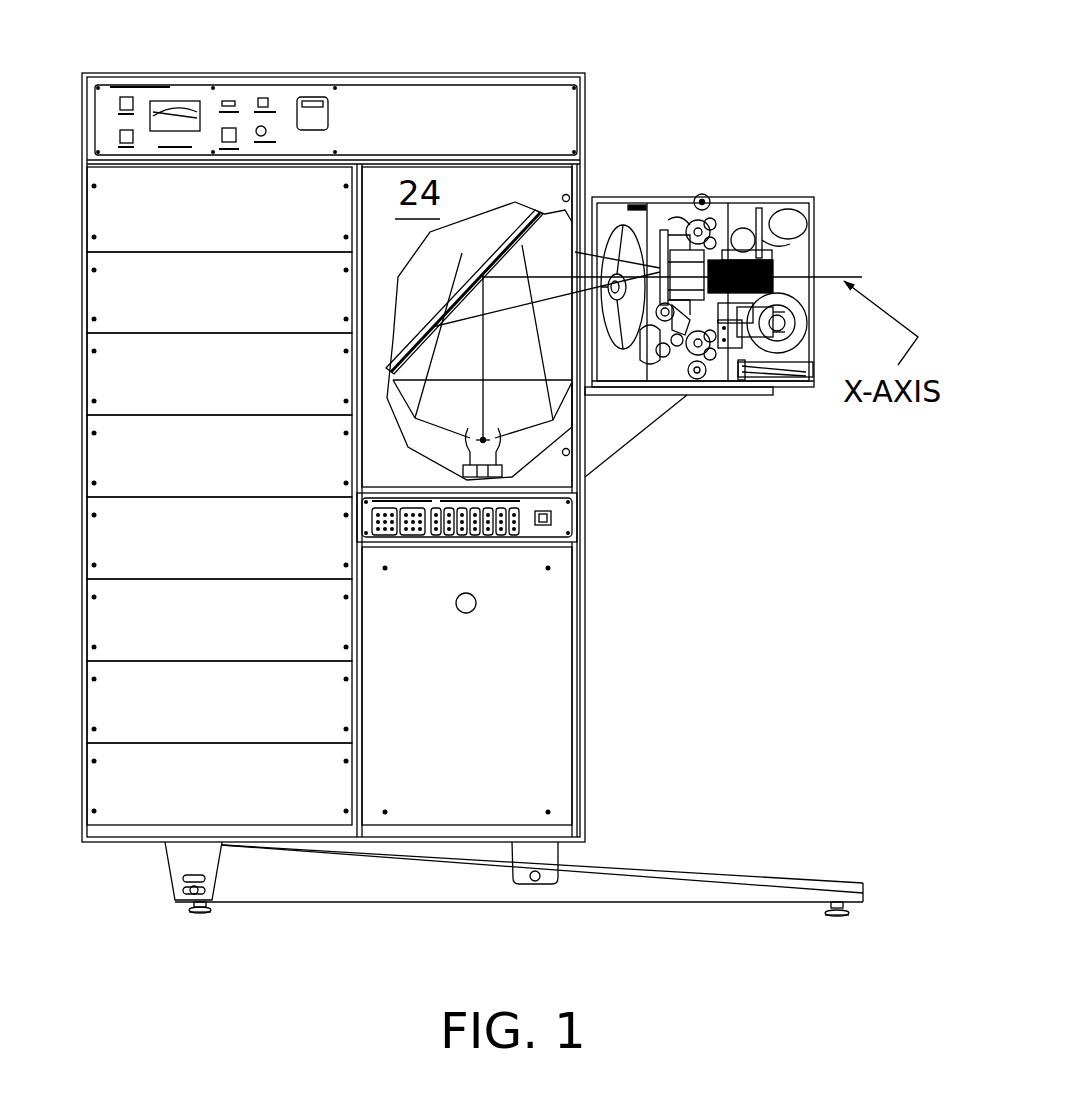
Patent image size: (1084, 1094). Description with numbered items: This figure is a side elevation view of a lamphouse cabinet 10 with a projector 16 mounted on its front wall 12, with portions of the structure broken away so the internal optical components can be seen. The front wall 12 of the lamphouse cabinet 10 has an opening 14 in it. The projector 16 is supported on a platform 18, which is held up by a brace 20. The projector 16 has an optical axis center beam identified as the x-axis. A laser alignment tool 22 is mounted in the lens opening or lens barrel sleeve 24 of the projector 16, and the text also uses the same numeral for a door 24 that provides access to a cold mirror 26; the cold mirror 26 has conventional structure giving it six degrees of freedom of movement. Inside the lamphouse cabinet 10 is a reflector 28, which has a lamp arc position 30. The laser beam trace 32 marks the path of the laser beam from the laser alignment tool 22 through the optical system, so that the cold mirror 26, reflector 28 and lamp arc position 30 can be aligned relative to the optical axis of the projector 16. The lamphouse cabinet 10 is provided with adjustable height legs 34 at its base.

The lamphouse cabinet 10 is at (333, 421).
The front wall 12 is at (475, 454).
The opening 14 is at (578, 232).
The projector 16 is at (746, 250).
The platform 18 is at (662, 358).
The brace 20 is at (642, 507).
The laser alignment tool 22 is at (822, 234).
The lens barrel sleeve 24 is at (841, 388).
The cold mirror 26 is at (527, 223).
The reflector 28 is at (685, 441).
The lamp arc position 30 is at (700, 568).
The laser beam trace 32 is at (761, 476).
The adjustable height legs 34 is at (519, 937).